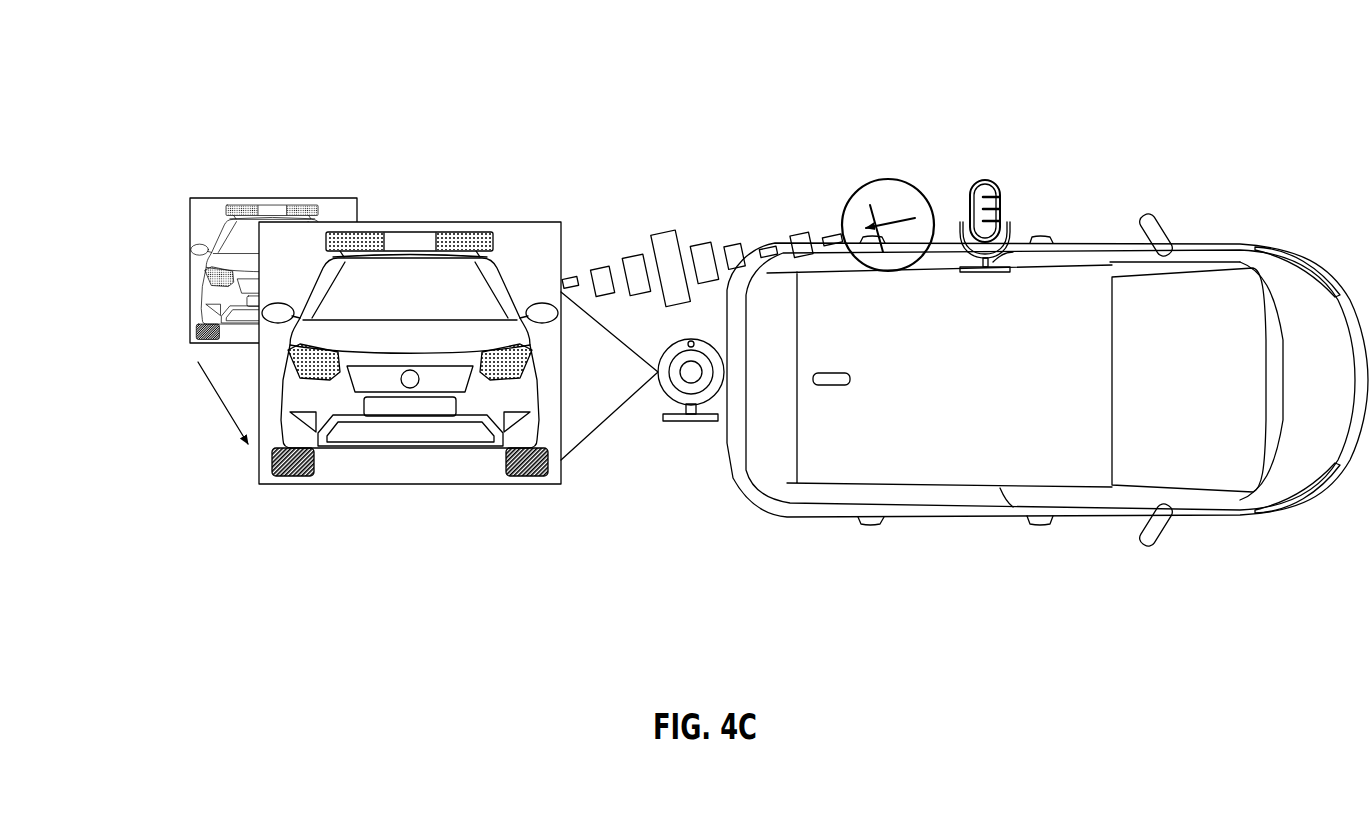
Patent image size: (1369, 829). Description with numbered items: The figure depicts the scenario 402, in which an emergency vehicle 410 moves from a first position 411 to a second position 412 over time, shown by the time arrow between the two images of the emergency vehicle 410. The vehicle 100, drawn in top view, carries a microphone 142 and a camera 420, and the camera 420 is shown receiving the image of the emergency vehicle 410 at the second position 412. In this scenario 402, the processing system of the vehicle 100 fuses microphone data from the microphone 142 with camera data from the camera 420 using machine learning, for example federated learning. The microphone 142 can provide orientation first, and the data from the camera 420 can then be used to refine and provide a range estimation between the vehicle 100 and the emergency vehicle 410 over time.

The scenario 402 is at (118, 58).
The first position 411 is at (273, 198).
The second position 412 is at (413, 230).
The emergency vehicle 410 is at (397, 452).
The camera 420 is at (678, 422).
The vehicle 100 is at (808, 518).
The microphone 142 is at (985, 180).